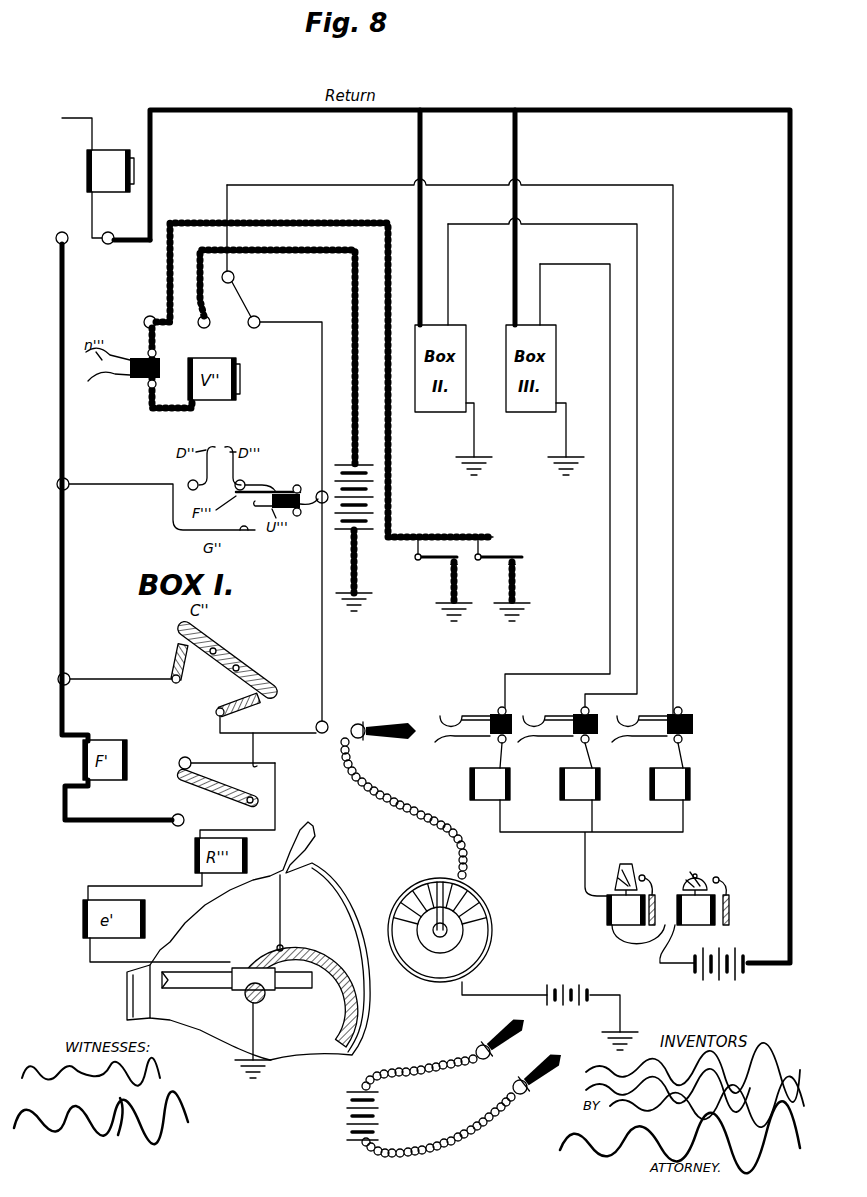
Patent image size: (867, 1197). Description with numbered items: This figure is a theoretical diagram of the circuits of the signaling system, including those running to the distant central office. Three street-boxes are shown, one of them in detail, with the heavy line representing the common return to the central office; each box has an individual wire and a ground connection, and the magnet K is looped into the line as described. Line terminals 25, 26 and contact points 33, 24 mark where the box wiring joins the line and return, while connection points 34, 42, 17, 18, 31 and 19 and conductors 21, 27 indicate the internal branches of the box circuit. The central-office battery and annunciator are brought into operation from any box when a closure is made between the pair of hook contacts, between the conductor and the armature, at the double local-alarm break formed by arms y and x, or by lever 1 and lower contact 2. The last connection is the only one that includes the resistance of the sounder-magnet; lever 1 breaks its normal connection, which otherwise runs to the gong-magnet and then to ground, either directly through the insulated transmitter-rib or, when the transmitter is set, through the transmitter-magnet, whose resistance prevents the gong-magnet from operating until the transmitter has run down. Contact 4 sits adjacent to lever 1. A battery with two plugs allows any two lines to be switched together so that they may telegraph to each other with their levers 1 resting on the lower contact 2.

The line terminal 25 is at (56, 243).
The line terminal 26 is at (107, 245).
The contact 34 is at (155, 311).
The switch contact 17 is at (239, 288).
The contact 42 is at (213, 329).
The switch contact 18 is at (259, 331).
The contact 33 is at (74, 474).
The contact 31 is at (318, 490).
The contact 24 is at (115, 672).
The contact 19 is at (316, 724).
The conductor 21 is at (265, 750).
The conductor 27 is at (249, 800).
The contact 4' 4 is at (227, 754).
The lower contact 2 is at (172, 811).
The lever 1 is at (217, 793).
The magnet K is at (110, 171).
The local-alarm break arm x is at (239, 709).
The local-alarm break arm y is at (275, 675).